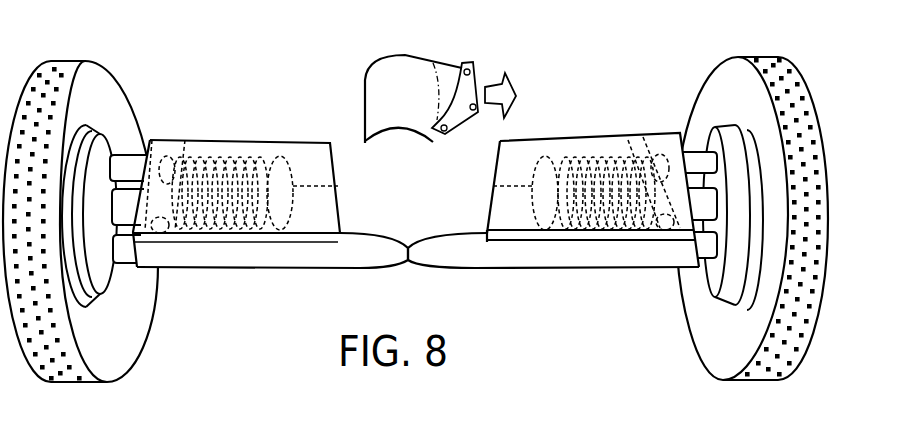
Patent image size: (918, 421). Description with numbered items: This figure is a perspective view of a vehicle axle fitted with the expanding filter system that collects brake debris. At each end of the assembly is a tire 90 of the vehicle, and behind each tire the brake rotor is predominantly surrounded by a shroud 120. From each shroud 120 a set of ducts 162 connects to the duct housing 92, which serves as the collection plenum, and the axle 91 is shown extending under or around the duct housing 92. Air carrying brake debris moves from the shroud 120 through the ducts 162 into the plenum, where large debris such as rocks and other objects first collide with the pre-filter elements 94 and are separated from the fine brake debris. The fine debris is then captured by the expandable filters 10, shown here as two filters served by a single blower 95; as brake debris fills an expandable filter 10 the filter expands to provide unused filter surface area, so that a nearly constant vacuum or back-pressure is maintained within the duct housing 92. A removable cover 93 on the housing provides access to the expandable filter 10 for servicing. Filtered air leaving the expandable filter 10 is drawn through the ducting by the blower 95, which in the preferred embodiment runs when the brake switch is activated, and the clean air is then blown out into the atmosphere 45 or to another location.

The expandable filter 10 is at (250, 154).
The atmosphere 45 is at (492, 84).
The tire 90 is at (75, 62).
The axle 91 is at (118, 195).
The duct housing 92 is at (518, 267).
The removable cover 93 is at (508, 234).
The pre-filter elements 94 is at (653, 231).
The blower 95 is at (380, 62).
The shroud 120 is at (121, 289).
The ducts 162 is at (120, 157).